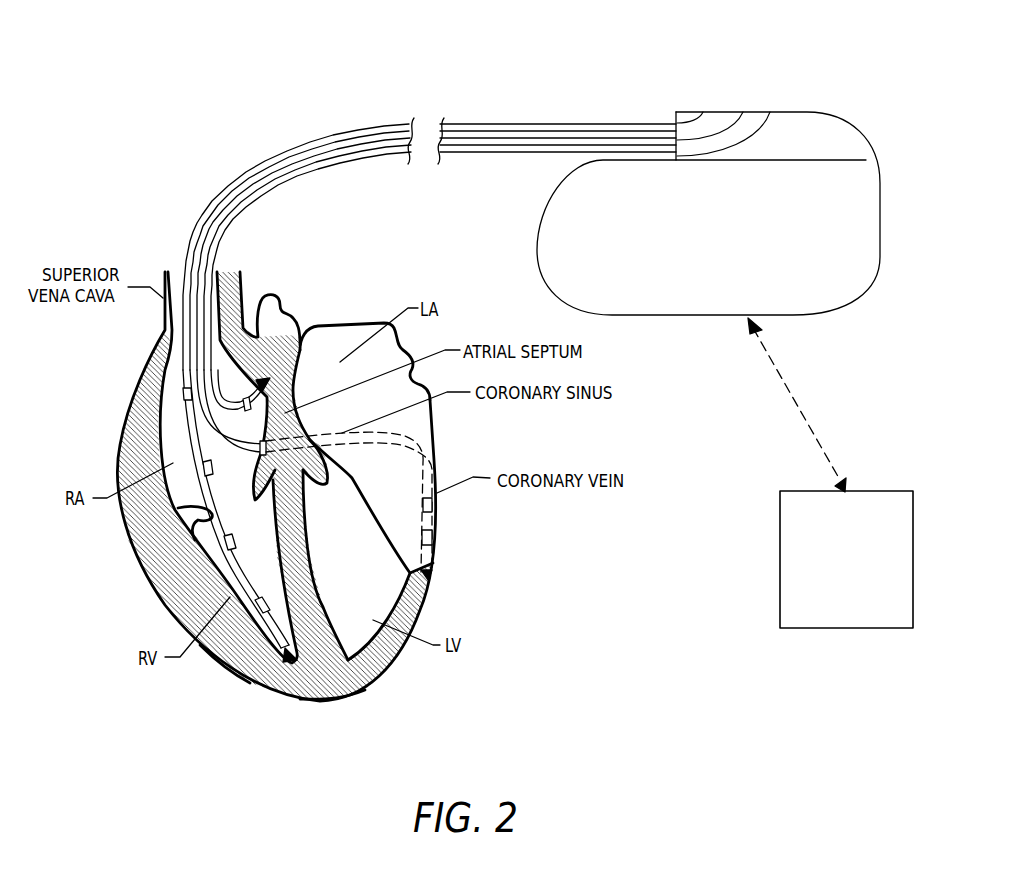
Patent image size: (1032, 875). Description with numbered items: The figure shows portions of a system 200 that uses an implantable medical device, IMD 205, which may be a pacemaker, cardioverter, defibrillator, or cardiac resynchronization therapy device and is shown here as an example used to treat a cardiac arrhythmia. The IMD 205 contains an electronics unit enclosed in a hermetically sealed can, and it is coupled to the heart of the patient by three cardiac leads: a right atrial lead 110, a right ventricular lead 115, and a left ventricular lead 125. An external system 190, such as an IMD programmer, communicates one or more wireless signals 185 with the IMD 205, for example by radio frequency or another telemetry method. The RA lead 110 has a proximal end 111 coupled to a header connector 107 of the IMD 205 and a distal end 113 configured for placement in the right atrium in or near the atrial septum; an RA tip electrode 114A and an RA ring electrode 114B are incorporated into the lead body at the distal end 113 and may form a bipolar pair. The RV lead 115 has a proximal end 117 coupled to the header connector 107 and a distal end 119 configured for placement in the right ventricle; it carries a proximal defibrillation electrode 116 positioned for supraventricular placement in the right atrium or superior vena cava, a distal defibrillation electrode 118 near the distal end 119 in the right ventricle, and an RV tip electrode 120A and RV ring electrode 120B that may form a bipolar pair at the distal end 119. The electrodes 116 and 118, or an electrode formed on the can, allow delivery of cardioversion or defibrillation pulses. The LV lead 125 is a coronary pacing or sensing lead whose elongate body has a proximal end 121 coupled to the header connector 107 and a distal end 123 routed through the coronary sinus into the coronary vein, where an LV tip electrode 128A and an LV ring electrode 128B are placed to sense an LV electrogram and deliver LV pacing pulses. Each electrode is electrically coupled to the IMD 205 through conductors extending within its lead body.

The system 200 is at (105, 30).
The header connector 107 is at (845, 120).
The IMD 205 is at (835, 312).
The right atrial lead 110 is at (460, 158).
The right ventricular lead 115 is at (340, 131).
The left ventricular lead 125 is at (285, 165).
The proximal end 117 is at (703, 112).
The proximal end 121 is at (743, 112).
The proximal end 111 is at (770, 112).
The wireless signals 185 is at (797, 403).
The external system 190 is at (850, 630).
The proximal defibrillation electrode 116 is at (188, 417).
The distal defibrillation electrode 118 is at (237, 570).
The distal end 119 is at (282, 662).
The RV tip electrode 120A is at (320, 697).
The RV ring electrode 120B is at (243, 670).
The distal end 113 is at (272, 390).
The RA tip electrode 114A is at (300, 392).
The RA ring electrode 114B is at (245, 385).
The LV tip electrode 128A is at (437, 552).
The LV ring electrode 128B is at (440, 517).
The distal end 123 is at (430, 577).